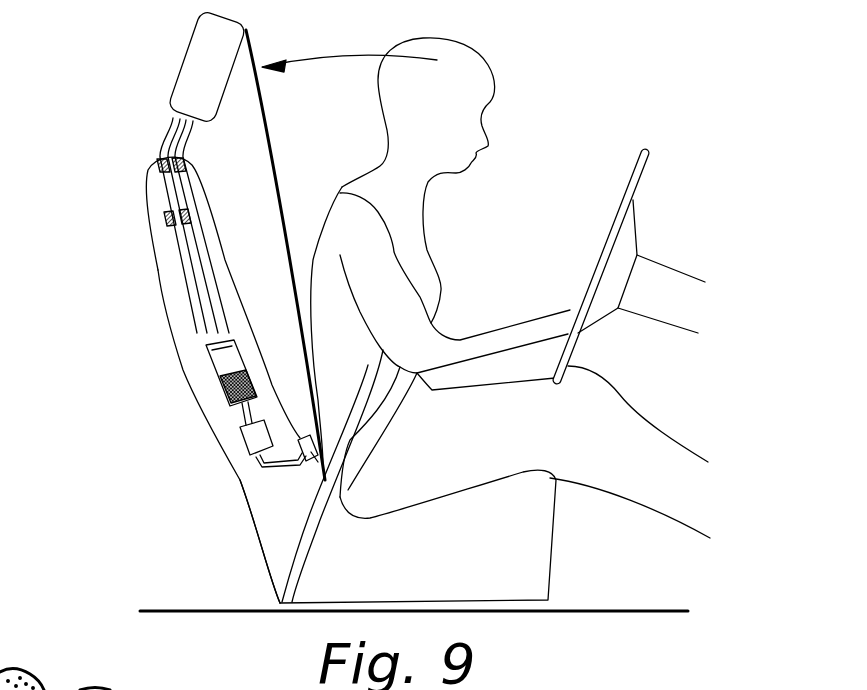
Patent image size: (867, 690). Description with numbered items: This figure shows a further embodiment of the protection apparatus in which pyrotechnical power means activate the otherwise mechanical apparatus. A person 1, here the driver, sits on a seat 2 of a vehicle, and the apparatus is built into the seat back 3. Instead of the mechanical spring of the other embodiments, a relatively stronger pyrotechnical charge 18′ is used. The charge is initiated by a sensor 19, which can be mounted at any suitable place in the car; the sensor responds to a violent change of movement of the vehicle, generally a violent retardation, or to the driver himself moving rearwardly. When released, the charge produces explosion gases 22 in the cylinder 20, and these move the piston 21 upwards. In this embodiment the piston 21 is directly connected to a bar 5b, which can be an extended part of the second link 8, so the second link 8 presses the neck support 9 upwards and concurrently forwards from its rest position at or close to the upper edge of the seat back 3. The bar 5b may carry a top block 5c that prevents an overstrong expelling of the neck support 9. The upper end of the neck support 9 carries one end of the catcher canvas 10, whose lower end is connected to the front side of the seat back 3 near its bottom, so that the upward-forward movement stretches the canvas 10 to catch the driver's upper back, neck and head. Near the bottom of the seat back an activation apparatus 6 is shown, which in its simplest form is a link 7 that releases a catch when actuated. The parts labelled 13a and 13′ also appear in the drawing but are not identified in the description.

The person 1 is at (400, 222).
The seat 2 is at (500, 562).
The seat back 3 is at (173, 350).
The bar 5b is at (182, 238).
The top block 5c is at (150, 170).
The activation apparatus 6 is at (288, 502).
The link 7 is at (268, 465).
The second link 8 is at (173, 143).
The neck support 9 is at (200, 70).
The catcher canvas 10 is at (272, 138).
The sensor 13a is at (27, 676).
The sensor 13′ is at (128, 689).
The pyrotechnical charge 18′ is at (255, 438).
The sensor 19 is at (313, 450).
The cylinder 20 is at (225, 382).
The piston 21 is at (228, 362).
The explosion gases 22 is at (257, 395).